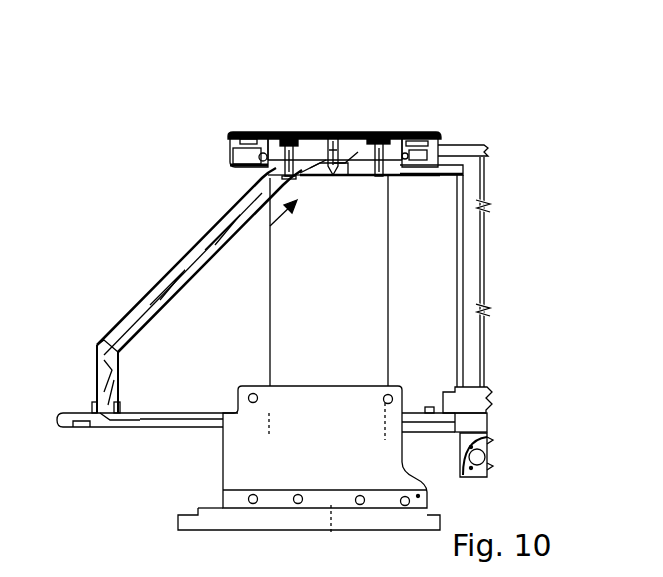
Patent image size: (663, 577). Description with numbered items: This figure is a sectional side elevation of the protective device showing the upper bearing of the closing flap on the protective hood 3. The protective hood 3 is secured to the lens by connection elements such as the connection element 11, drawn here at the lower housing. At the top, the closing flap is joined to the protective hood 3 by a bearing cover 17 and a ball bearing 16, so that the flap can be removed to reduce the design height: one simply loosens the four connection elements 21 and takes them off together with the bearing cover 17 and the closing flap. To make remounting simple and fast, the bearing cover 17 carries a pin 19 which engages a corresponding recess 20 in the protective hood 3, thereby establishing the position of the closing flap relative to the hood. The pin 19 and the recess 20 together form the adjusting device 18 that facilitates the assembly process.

The protective hood 3 is at (148, 290).
The connection element 11 is at (235, 463).
The ball bearing 16 is at (258, 130).
The bearing cover 17 is at (310, 130).
The adjusting device 18 is at (268, 228).
The pin 19 is at (328, 170).
The recess 20 is at (338, 168).
The connection element 21 is at (378, 130).